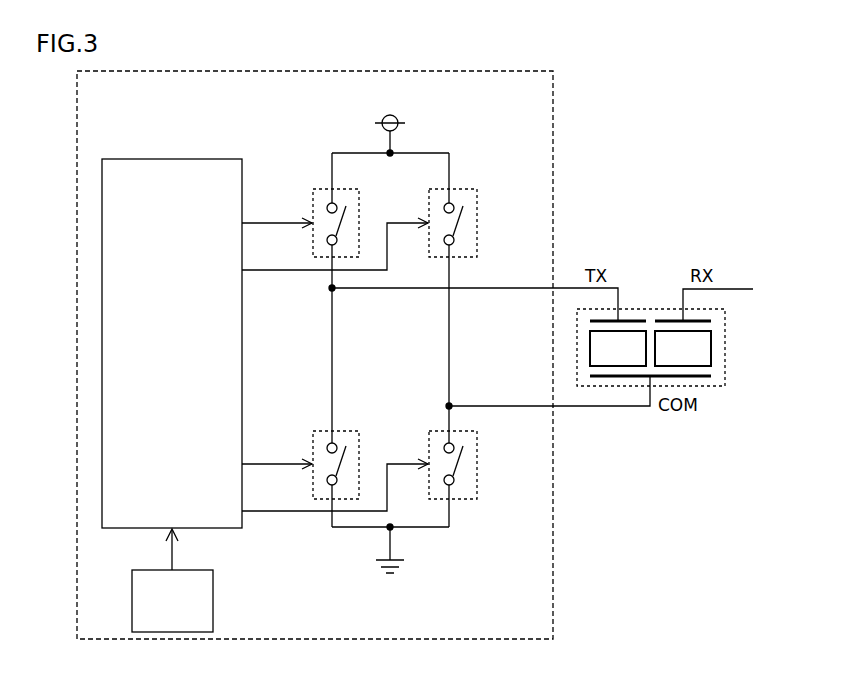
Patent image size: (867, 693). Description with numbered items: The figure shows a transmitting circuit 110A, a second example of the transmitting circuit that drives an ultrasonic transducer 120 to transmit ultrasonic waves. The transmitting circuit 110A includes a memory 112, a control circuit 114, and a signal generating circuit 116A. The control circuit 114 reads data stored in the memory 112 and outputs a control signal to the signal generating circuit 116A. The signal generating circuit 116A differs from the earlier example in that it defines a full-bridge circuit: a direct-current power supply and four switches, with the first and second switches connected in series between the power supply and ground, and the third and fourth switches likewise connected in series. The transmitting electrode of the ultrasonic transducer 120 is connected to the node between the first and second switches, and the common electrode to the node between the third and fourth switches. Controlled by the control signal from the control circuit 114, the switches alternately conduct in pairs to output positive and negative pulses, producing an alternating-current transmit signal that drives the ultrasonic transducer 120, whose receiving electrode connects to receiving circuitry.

The transmitting circuit 110A is at (553, 86).
The memory 112 is at (186, 568).
The control circuit 114 is at (186, 158).
The signal generating circuit 116A is at (494, 150).
The ultrasonic transducer 120 is at (725, 348).